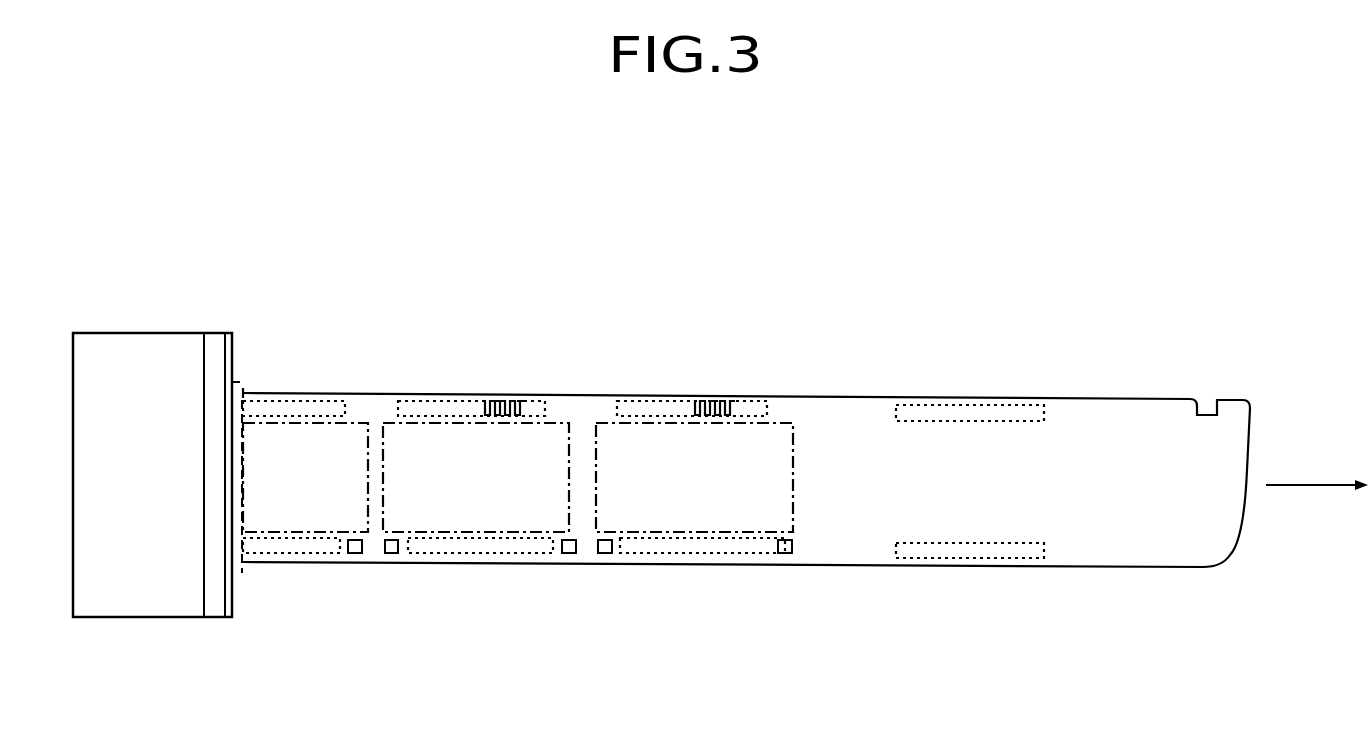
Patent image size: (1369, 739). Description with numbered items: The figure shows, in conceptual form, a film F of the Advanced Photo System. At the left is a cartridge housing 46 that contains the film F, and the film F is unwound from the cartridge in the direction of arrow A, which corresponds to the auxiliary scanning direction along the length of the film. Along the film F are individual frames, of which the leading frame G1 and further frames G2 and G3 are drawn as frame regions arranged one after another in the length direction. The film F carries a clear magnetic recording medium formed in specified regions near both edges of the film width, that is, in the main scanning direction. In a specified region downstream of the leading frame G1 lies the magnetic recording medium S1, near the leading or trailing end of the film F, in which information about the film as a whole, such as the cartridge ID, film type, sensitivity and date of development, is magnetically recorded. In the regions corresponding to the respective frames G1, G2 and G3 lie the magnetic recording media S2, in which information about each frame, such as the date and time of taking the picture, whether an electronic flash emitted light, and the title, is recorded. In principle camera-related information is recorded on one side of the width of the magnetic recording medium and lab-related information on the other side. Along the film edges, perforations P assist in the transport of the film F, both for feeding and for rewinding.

The cartridge housing 46 is at (180, 380).
The APS film F is at (1106, 512).
The leading frame G1 is at (760, 465).
The frame G2 is at (540, 465).
The frame G3 is at (331, 460).
The magnetic recording medium S1 is at (935, 405).
The magnetic recording medium S2 is at (257, 403).
The perforations P is at (355, 555).
The arrow indicating film unwinding direction A is at (1317, 470).